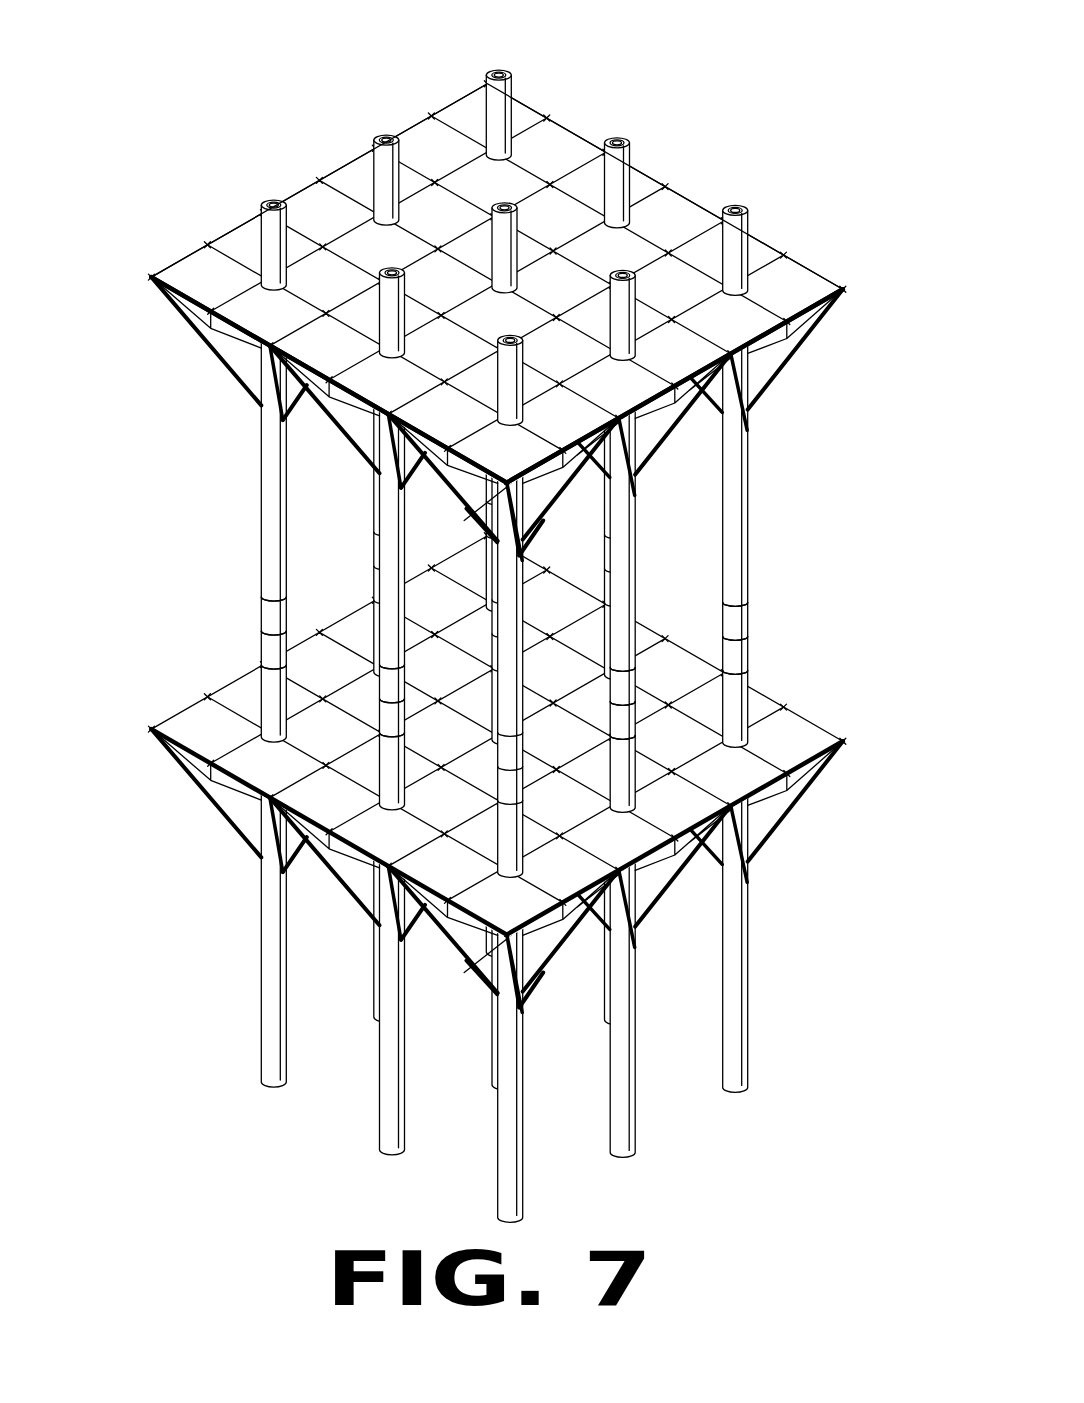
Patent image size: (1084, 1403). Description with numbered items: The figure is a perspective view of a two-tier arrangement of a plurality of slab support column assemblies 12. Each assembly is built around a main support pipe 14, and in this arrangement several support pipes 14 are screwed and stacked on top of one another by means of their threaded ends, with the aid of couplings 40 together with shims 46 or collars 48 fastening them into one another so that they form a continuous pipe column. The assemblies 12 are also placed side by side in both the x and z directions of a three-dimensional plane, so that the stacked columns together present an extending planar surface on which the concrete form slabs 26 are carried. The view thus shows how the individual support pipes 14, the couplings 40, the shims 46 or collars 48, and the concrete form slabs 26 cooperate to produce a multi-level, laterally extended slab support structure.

The slab support column assembly 12 is at (718, 138).
The main support pipe 14 is at (268, 922).
The concrete form slabs 26 is at (340, 195).
The couplings 40 is at (622, 685).
The shims 46 is at (390, 713).
The collars 48 is at (392, 701).